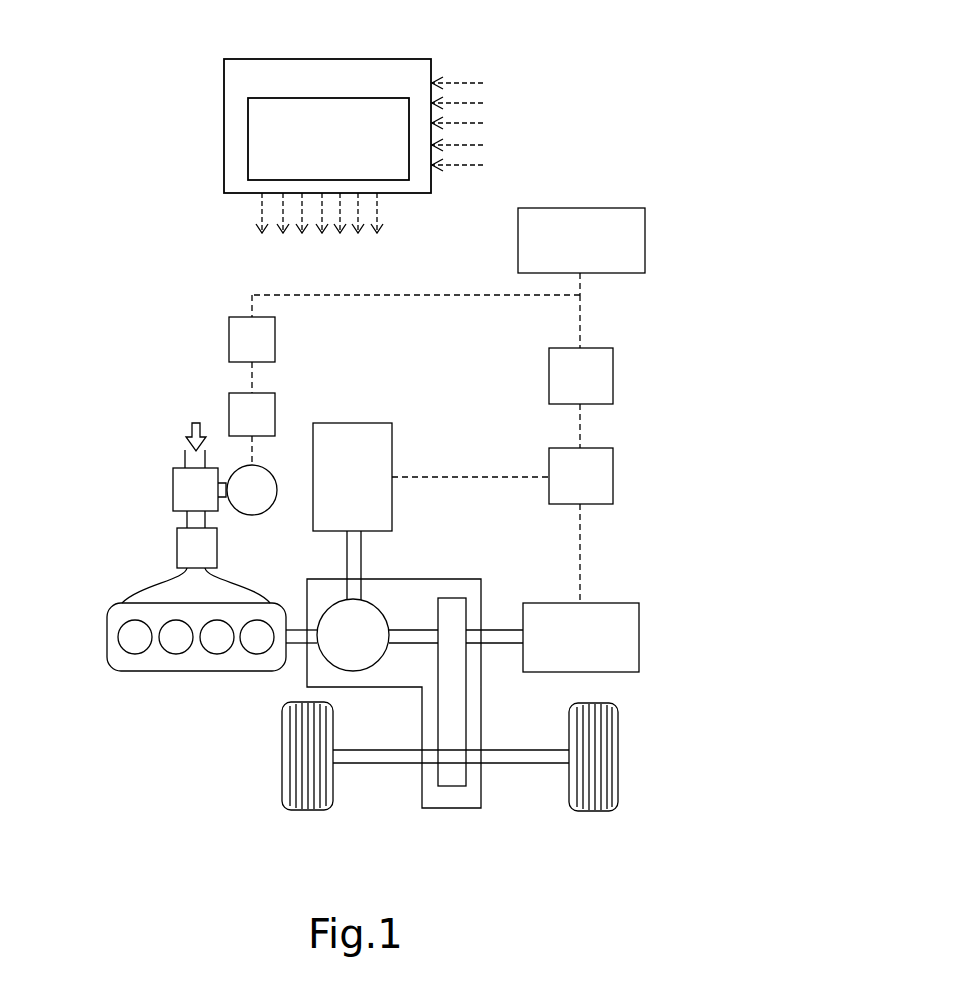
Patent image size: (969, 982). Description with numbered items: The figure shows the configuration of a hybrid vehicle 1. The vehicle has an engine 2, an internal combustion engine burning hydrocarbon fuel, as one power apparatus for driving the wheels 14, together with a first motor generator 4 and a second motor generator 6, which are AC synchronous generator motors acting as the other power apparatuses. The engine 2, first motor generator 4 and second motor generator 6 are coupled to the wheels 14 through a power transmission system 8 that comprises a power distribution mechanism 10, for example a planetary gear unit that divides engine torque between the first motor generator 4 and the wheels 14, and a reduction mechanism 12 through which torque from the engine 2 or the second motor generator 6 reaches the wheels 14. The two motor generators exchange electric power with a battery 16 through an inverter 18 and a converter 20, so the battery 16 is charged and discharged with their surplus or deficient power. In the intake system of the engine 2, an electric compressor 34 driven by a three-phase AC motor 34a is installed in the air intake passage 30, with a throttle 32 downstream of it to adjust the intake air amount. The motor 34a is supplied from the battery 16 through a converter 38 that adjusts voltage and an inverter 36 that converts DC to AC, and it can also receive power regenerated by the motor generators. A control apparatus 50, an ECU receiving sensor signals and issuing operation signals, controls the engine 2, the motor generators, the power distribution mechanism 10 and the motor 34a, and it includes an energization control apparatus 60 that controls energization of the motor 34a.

The hybrid vehicle 1 is at (143, 293).
The engine 2 is at (107, 632).
The first motor generator 4 is at (372, 423).
The second motor generator 6 is at (612, 603).
The power transmission system 8 is at (470, 579).
The power distribution mechanism 10 is at (375, 602).
The reduction mechanism 12 is at (447, 598).
The wheels 14 is at (282, 750).
The battery 16 is at (596, 208).
The inverter 18 is at (598, 448).
The converter 20 is at (598, 348).
The air intake passage 30 is at (182, 460).
The throttle 32 is at (177, 543).
The electric compressor 34 is at (173, 490).
The motor 34a is at (268, 516).
The inverter 36 is at (240, 393).
The converter 38 is at (240, 317).
The control apparatus 50 is at (316, 59).
The energization control apparatus 60 is at (248, 125).